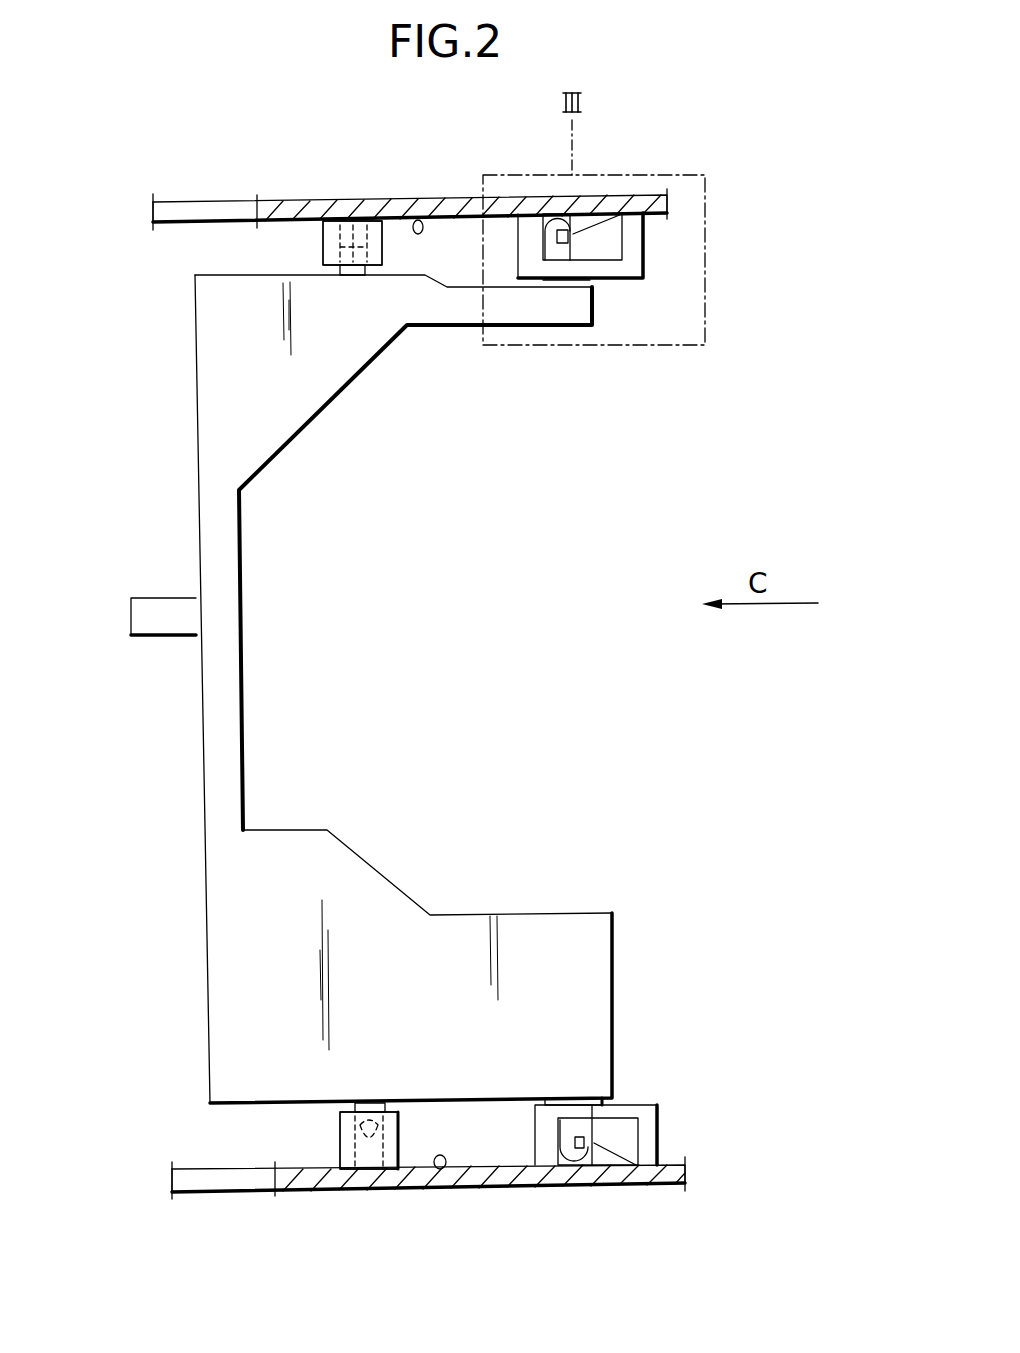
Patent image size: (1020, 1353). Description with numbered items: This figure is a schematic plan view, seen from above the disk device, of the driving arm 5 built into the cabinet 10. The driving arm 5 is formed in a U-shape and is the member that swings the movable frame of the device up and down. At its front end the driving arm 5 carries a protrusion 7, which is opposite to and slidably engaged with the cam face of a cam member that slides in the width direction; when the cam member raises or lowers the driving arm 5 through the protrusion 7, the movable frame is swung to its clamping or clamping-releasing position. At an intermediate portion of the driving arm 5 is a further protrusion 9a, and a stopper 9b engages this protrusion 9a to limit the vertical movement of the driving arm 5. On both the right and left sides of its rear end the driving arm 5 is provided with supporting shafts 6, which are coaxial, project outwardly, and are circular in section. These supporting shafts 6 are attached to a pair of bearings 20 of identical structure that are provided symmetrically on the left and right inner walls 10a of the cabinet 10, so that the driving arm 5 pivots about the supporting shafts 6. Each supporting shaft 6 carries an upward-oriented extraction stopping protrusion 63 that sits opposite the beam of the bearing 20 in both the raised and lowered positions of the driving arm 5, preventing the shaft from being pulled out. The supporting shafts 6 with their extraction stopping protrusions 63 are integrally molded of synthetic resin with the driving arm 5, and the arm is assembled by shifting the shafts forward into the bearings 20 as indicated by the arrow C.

The driving arm 5 is at (199, 741).
The protrusion 7 is at (130, 620).
The cabinet 10 is at (230, 200).
The inner wall 10a is at (417, 220).
The protrusion 9a is at (350, 221).
The stopper 9b is at (383, 243).
The supporting shaft 6 is at (571, 245).
The extraction stopping protrusion 63 is at (562, 244).
The bearing 20 is at (676, 245).